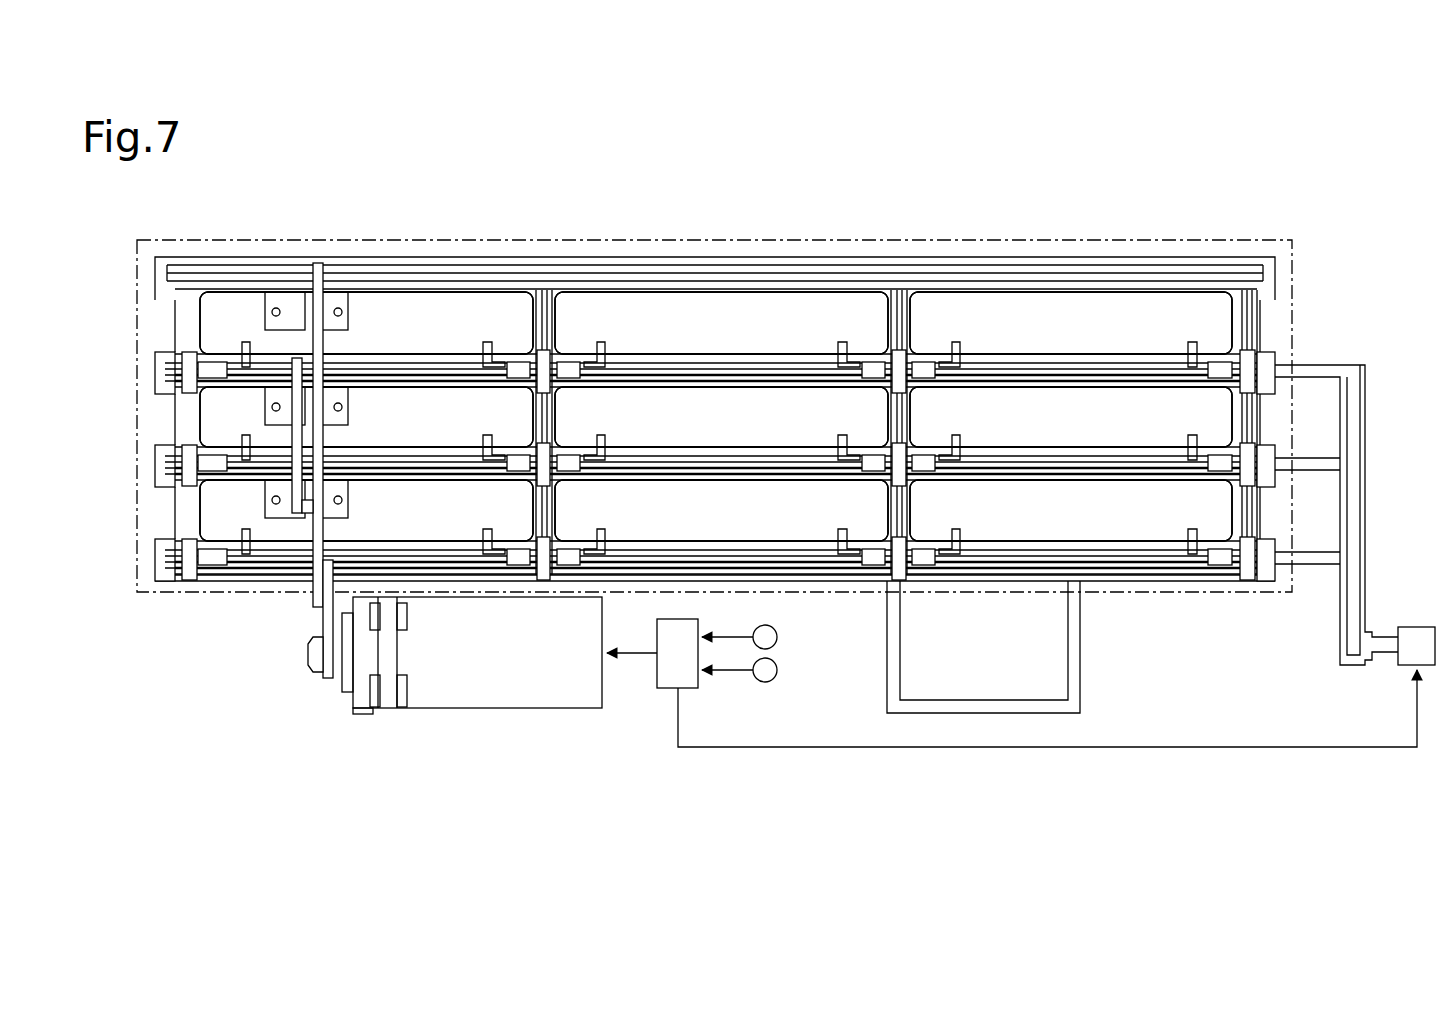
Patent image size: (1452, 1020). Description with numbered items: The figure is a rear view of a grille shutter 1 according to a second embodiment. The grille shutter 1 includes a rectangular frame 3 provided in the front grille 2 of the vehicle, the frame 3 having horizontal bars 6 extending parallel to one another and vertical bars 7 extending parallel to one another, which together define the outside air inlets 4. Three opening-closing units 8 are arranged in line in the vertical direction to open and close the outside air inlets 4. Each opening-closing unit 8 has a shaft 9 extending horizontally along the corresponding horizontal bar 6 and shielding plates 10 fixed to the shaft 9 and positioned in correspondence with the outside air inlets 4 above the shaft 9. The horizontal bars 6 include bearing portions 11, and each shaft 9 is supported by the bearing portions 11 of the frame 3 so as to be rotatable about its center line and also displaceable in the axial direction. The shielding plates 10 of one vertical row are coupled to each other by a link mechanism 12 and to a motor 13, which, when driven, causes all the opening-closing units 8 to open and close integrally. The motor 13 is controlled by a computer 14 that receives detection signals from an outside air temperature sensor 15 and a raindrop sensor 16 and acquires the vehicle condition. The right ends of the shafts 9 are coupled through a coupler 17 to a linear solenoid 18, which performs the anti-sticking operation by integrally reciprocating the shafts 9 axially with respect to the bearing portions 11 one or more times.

The grille shutter 1 is at (1267, 250).
The front grille 2 is at (137, 300).
The frame 3 is at (1277, 573).
The outside air inlets 4 is at (416, 388).
The horizontal bars 6 is at (725, 292).
The vertical bars 7 is at (198, 420).
The opening-closing units 8 is at (716, 416).
The shaft 9 is at (165, 556).
The shielding plates 10 is at (468, 415).
The bearing portions 11 is at (192, 376).
The link mechanism 12 is at (318, 255).
The motor 13 is at (478, 708).
The computer 14 is at (660, 688).
The outside air temperature sensor 15 is at (779, 637).
The raindrop sensor 16 is at (779, 670).
The coupler 17 is at (1366, 428).
The linear solenoid 18 is at (1416, 627).